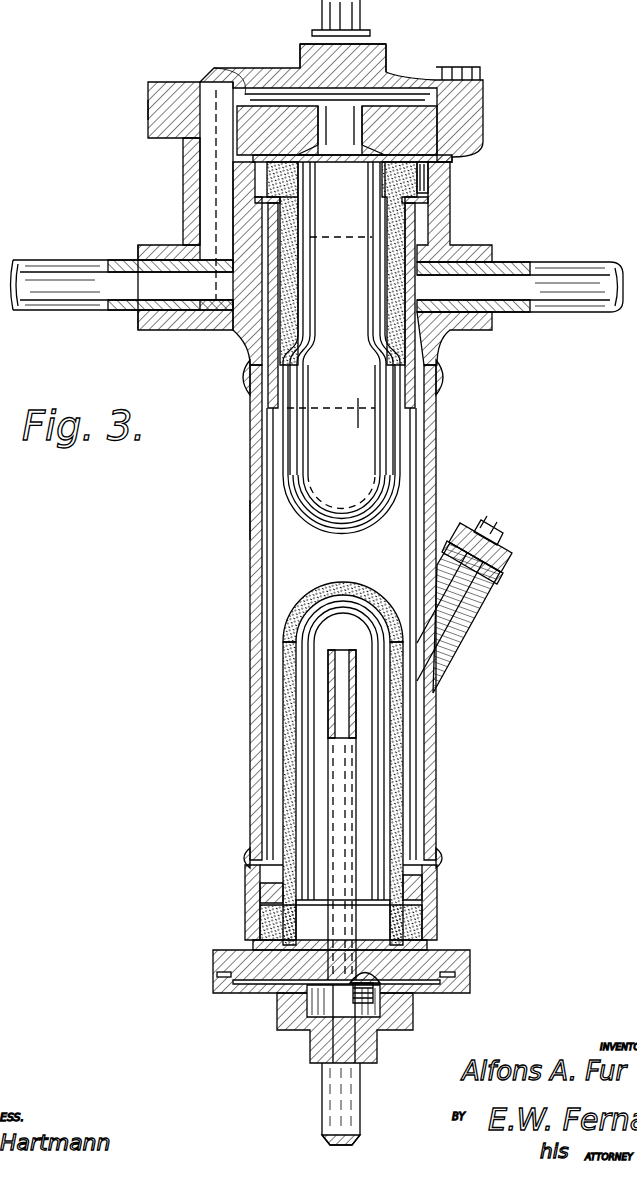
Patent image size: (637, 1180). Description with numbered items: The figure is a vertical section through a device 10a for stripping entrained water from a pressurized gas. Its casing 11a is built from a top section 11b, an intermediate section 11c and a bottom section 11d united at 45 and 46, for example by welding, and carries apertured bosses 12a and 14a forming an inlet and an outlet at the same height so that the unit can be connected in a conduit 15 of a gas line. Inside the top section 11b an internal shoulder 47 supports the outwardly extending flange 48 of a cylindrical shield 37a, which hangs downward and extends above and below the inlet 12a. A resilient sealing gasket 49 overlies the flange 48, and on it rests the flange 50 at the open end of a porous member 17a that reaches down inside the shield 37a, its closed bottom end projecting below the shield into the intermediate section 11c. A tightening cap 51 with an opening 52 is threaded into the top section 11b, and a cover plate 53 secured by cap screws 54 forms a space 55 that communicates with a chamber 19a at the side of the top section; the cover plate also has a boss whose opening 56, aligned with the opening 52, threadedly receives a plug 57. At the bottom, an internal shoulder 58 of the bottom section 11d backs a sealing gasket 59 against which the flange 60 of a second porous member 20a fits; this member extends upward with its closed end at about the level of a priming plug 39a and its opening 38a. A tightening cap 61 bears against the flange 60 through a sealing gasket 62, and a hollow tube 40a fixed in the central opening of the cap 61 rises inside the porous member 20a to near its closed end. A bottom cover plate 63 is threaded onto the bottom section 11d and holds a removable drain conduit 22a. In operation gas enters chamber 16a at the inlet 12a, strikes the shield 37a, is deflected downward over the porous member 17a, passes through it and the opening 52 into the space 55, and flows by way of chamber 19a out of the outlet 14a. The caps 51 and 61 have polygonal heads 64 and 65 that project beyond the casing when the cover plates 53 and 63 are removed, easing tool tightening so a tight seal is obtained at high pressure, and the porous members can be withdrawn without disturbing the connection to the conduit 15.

The device 10a is at (125, 133).
The casing 11a is at (451, 470).
The top section 11b is at (450, 202).
The intermediate section 11c is at (250, 523).
The bottom section 11d is at (247, 907).
The inlet boss 12a is at (480, 253).
The outlet boss 14a is at (163, 280).
The conduit 15 is at (53, 312).
The chamber 16a is at (365, 571).
The porous member 17a is at (308, 452).
The chamber 19a is at (217, 202).
The porous member 20a is at (405, 765).
The drain conduit 22a is at (343, 1108).
The shield 37a is at (415, 350).
The opening 38a is at (443, 612).
The priming plug 39a is at (490, 560).
The hollow tube 40a is at (337, 783).
The joint 45 is at (448, 377).
The joint 46 is at (430, 860).
The internal shoulder 47 is at (420, 242).
The flange 48 is at (450, 180).
The sealing gasket 49 is at (240, 197).
The flange 50 is at (450, 170).
The tightening cap 51 is at (487, 95).
The opening 52 is at (400, 137).
The cover plate 53 is at (262, 72).
The cap screws 54 is at (478, 77).
The space 55 is at (245, 90).
The opening 56 is at (386, 48).
The plug 57 is at (318, 32).
The internal shoulder 58 is at (417, 883).
The sealing gasket 59 is at (417, 905).
The flange 60 is at (413, 923).
The tightening cap 61 is at (403, 967).
The sealing gasket 62 is at (423, 947).
The bottom cover plate 63 is at (213, 973).
The polygonal head 64 is at (300, 58).
The polygonal head 65 is at (307, 1003).